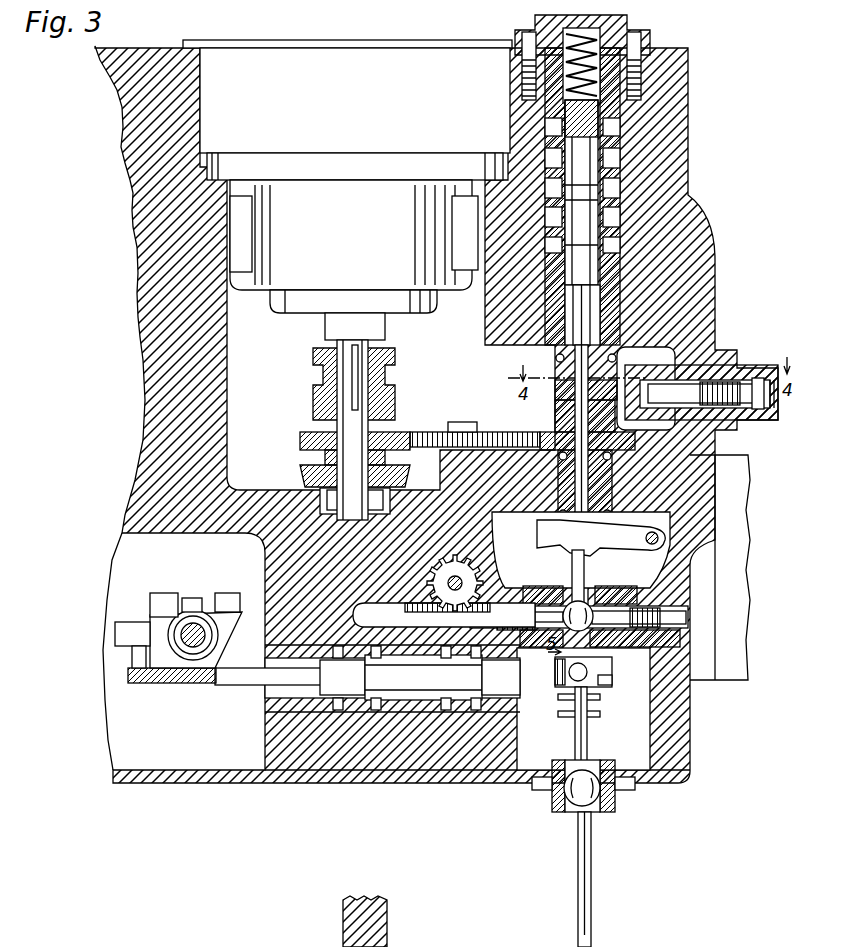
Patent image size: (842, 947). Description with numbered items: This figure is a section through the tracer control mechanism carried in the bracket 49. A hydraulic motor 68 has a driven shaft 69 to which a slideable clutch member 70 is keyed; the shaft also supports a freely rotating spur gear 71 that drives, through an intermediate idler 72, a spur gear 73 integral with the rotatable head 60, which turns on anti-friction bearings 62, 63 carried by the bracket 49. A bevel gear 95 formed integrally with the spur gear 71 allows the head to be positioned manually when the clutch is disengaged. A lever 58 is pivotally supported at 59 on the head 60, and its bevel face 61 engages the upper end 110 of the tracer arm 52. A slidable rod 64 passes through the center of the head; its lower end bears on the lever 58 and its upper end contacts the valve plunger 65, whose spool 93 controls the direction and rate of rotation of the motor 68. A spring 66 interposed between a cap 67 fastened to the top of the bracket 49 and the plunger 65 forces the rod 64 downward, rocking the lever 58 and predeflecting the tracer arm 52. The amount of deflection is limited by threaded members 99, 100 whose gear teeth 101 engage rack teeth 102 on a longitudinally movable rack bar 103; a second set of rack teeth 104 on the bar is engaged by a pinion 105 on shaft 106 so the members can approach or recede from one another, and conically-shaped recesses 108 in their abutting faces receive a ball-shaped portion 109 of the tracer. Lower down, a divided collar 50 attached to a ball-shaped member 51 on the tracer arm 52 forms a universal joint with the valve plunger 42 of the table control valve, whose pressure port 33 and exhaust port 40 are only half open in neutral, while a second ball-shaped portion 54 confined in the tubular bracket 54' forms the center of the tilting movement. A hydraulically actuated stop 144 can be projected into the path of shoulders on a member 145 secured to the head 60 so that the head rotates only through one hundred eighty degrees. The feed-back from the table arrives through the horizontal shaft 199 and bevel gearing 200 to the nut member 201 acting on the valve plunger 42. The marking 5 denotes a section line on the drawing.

The bracket 49 is at (715, 252).
The cap 67 is at (627, 25).
The spring 66 is at (641, 80).
The spool 93 is at (598, 190).
The valve plunger 65 is at (598, 275).
The hydraulically actuated stop 144 is at (705, 348).
The slidable rod 64 is at (563, 380).
The spur gear 73 is at (548, 436).
The intermediate idler 72 is at (500, 432).
The member 145 is at (530, 378).
The hydraulic motor 68 is at (445, 300).
The slideable clutch member 70 is at (318, 385).
The spur gear 71 is at (300, 440).
The bevel gear 95 is at (300, 470).
The driven shaft 69 is at (358, 418).
The pinion 105 is at (492, 528).
The bevel face 61 is at (600, 553).
The ball-shaped portion 109 is at (645, 544).
The gear teeth 101 is at (605, 592).
The upper end 110 is at (572, 560).
The rack teeth 102 is at (637, 596).
The threaded member 100 is at (680, 638).
The rack bar 103 is at (686, 618).
The threaded member 99 is at (565, 602).
The shaft 106 is at (470, 565).
The valve plunger 42 is at (540, 698).
The rack teeth 104 is at (558, 665).
The conically-shaped recesses 108 is at (598, 668).
The divided collar 50 is at (605, 686).
The ball-shaped member 51 is at (558, 698).
The tracer arm 52 is at (587, 752).
The second ball-shaped portion 54 is at (587, 797).
The tubular bracket 54' is at (540, 821).
The control rod 5 is at (570, 861).
The nut member 201 is at (242, 686).
The exhaust port 40 is at (362, 712).
The pressure port 33 is at (438, 712).
The bevel gearing 200 is at (163, 600).
The horizontal shaft 199 is at (126, 630).
The anti-friction bearing 63 is at (655, 476).
The anti-friction bearing 62 is at (665, 503).
The rotatable head 60 is at (620, 522).
The pivot 59 is at (618, 540).
The lever 58 is at (658, 540).